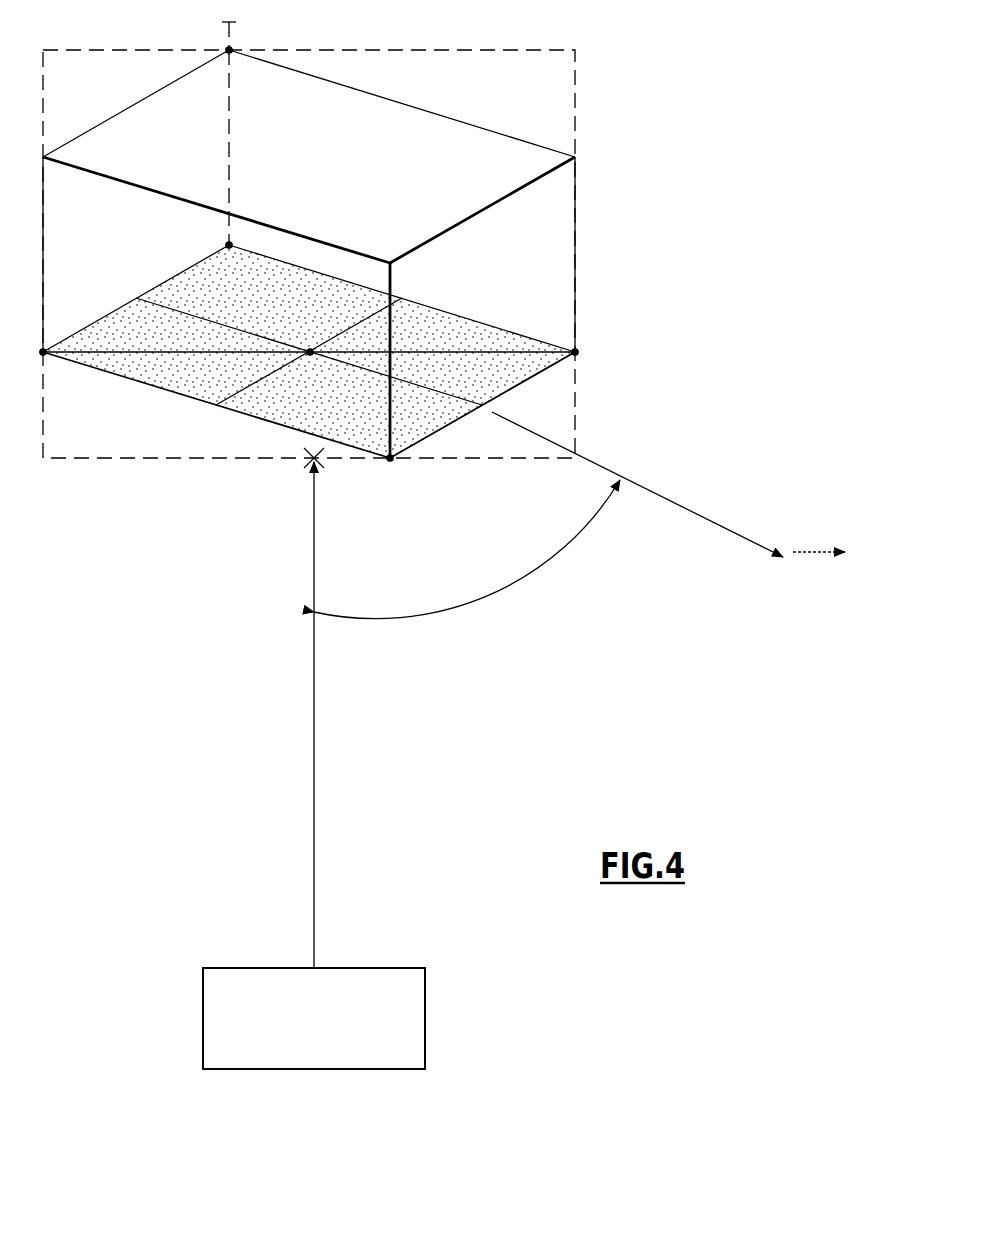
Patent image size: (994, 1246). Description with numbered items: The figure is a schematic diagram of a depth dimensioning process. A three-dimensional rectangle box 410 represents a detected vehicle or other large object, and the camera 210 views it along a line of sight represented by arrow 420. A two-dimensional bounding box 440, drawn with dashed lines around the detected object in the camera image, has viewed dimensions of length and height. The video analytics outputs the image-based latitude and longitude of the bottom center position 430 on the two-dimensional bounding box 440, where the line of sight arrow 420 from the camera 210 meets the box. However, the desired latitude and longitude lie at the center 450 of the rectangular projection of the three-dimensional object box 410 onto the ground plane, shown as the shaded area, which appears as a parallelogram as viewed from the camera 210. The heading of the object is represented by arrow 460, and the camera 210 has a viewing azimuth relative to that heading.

The camera 210 is at (395, 968).
The three-dimensional rectangle box 410 is at (425, 108).
The arrow 420 is at (314, 743).
The bottom center position 430 is at (309, 462).
The two-dimensional bounding box 440 is at (455, 50).
The center 450 is at (310, 350).
The arrow 460 is at (718, 520).